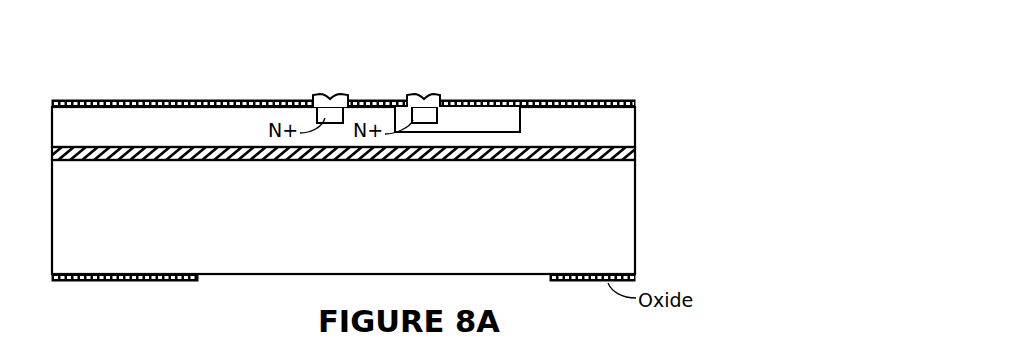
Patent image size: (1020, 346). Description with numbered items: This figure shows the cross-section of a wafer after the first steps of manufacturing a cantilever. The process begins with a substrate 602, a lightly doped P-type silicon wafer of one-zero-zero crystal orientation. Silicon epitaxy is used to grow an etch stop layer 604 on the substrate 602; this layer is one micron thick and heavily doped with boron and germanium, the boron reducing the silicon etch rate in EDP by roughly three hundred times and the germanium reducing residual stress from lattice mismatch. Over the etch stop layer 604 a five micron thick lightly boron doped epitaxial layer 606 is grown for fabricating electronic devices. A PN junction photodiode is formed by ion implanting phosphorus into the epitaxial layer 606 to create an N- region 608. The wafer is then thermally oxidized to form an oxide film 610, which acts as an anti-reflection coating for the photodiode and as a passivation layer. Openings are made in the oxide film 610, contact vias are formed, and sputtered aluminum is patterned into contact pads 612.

The substrate 602 is at (190, 193).
The etch stop layer 604 is at (635, 157).
The epitaxial layer 606 is at (628, 121).
The N- region 608 is at (485, 120).
The oxide film 610 is at (580, 104).
The contact pads 612 is at (420, 93).